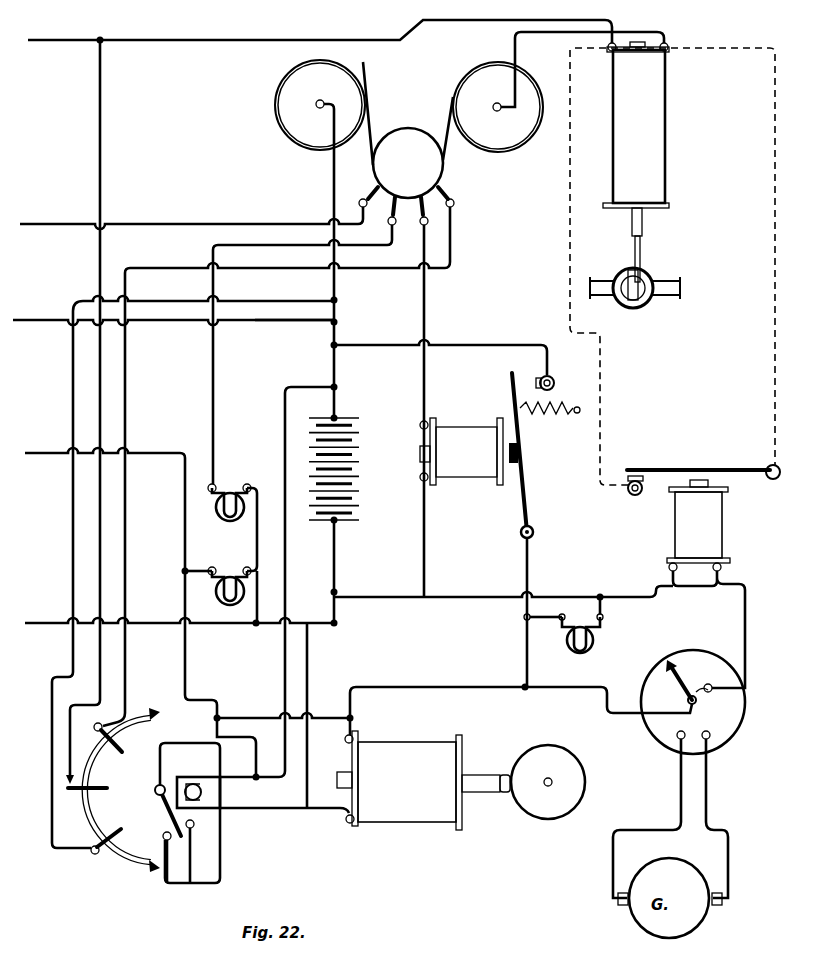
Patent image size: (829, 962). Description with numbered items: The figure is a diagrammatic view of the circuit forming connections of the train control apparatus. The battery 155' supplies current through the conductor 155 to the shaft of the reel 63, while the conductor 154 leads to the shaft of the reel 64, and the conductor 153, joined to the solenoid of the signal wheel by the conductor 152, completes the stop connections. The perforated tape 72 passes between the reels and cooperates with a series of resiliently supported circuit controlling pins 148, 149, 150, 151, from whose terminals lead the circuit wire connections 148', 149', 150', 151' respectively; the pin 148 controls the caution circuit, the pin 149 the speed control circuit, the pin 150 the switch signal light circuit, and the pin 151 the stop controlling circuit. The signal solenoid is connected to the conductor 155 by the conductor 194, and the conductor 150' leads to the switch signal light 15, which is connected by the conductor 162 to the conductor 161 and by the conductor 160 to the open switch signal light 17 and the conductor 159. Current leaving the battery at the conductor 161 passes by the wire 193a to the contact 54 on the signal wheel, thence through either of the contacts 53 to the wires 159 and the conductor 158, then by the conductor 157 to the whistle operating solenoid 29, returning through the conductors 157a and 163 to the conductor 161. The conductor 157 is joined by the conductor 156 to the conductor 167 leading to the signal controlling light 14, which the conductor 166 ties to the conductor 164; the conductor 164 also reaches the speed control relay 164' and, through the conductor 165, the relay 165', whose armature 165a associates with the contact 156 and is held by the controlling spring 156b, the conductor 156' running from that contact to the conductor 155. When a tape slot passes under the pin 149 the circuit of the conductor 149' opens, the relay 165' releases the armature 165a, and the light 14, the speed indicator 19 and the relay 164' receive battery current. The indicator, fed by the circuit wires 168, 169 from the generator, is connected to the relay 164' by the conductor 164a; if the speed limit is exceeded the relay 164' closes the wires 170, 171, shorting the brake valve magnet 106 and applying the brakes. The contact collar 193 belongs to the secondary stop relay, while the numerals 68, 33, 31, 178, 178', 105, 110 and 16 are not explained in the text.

The conductor 153 is at (650, 30).
The conductor 152 is at (104, 58).
The reel 63 is at (320, 105).
The conductor 155 is at (362, 245).
The tape 72 is at (447, 127).
The reel 64 is at (498, 107).
The conductor 154 is at (498, 110).
The motor 68 is at (408, 171).
The circuit controlling pin 151 is at (317, 192).
The circuit controlling pin 148 is at (469, 201).
The circuit controlling pin 149 is at (455, 406).
The circuit controlling pin 150 is at (313, 350).
The circuit wire connection 151' is at (191, 212).
The conductor 150' is at (293, 360).
The conductor 148' is at (296, 469).
The brush 33 is at (124, 752).
The commutator segment arc 31 is at (128, 882).
The conductor 194 is at (75, 870).
The conductor 178 is at (173, 338).
The conductor 178' is at (289, 335).
The conductor 156' is at (440, 348).
The conductor 149' is at (450, 400).
The conductor 161 is at (300, 385).
The battery 155' is at (358, 469).
The conductor 162 is at (258, 548).
The conductor 159 is at (174, 905).
The conductor 160 is at (200, 568).
The switch signal light 15 is at (223, 520).
The open switch signal light 17 is at (215, 593).
The conductor 165 is at (503, 509).
The relay 165' is at (502, 452).
The armature 165a is at (533, 522).
The contact 156 is at (521, 540).
The controlling spring 156b is at (562, 418).
The wire 170 is at (609, 50).
The wire 171 is at (670, 50).
The stop or brake valve magnet 106 is at (648, 160).
The plunger rod 105 is at (643, 228).
The valve 110 is at (641, 253).
The speed control relay 164' is at (677, 525).
The conductor 164 is at (552, 579).
The conductor 164a is at (743, 640).
The conductor 166 is at (605, 607).
The conductor 167 is at (537, 621).
The signal controlling light 14 is at (594, 640).
The speed indicator 19 is at (745, 721).
The conductor 157 is at (712, 692).
The circuit wire 169 is at (679, 786).
The circuit wire 168 is at (710, 786).
The bell 16 is at (523, 782).
The solenoid 29 is at (399, 780).
The conductor 157a is at (337, 827).
The conductor 163 is at (310, 648).
The conductor 158 is at (341, 714).
The contact collar 193 is at (203, 777).
The wire 193a is at (190, 800).
The contact 54 is at (166, 817).
The contacts 53 is at (163, 836).